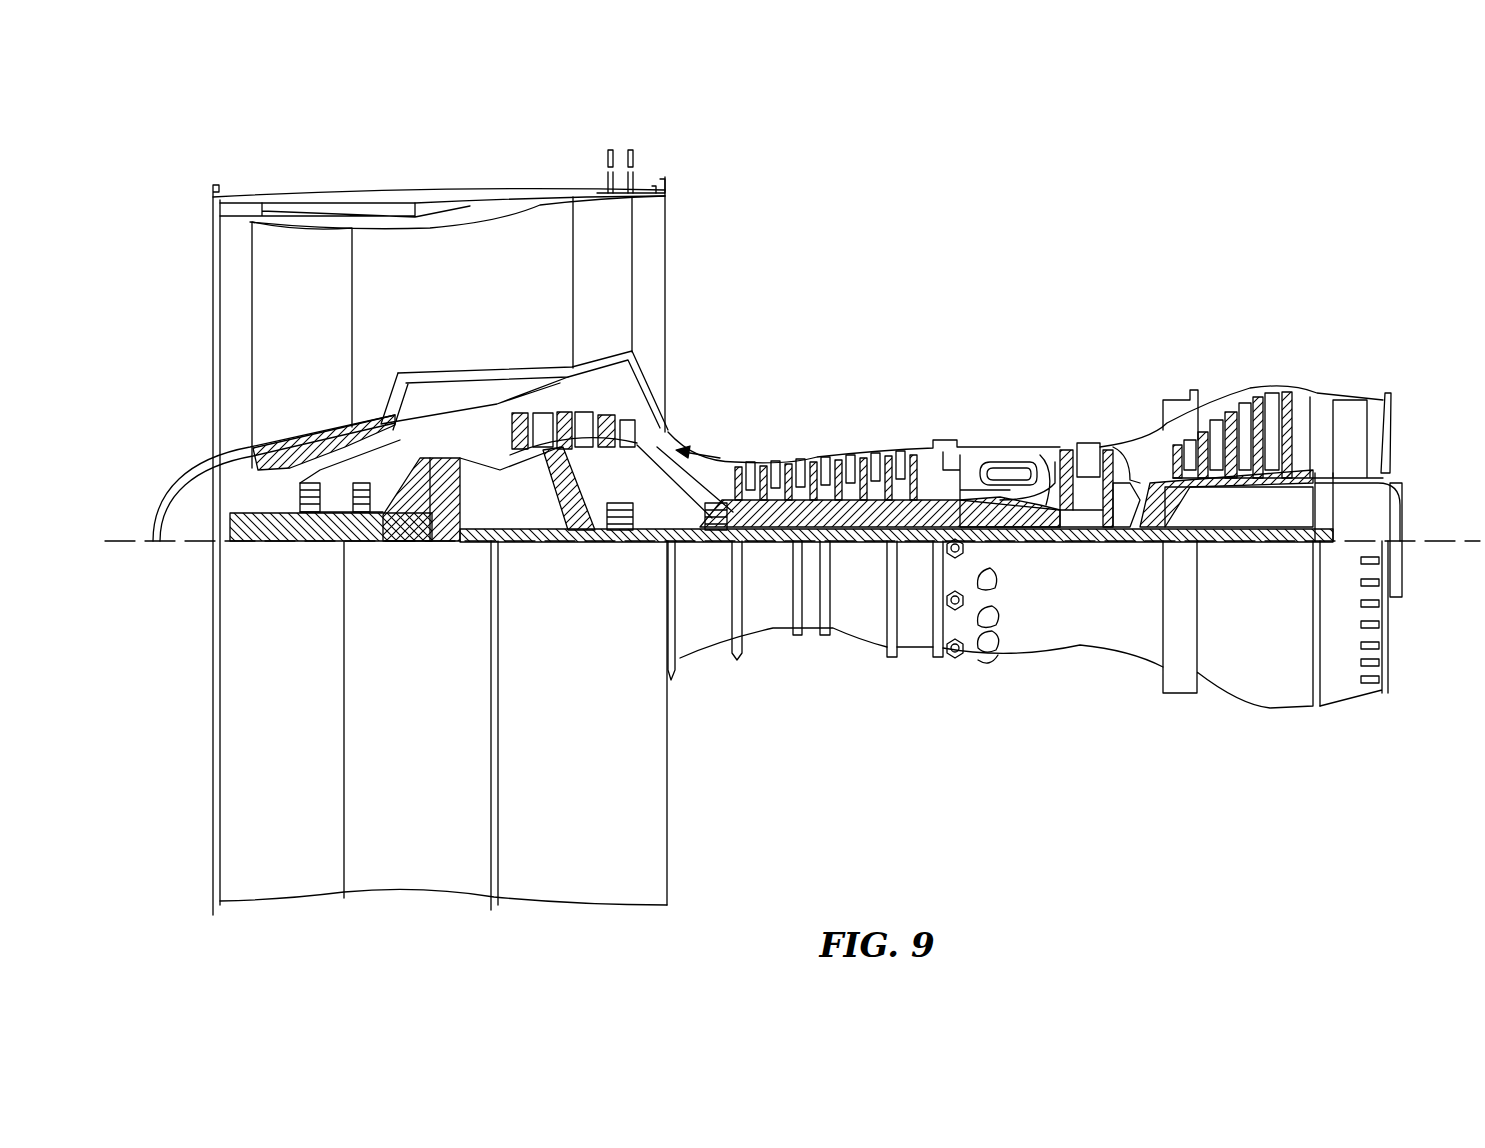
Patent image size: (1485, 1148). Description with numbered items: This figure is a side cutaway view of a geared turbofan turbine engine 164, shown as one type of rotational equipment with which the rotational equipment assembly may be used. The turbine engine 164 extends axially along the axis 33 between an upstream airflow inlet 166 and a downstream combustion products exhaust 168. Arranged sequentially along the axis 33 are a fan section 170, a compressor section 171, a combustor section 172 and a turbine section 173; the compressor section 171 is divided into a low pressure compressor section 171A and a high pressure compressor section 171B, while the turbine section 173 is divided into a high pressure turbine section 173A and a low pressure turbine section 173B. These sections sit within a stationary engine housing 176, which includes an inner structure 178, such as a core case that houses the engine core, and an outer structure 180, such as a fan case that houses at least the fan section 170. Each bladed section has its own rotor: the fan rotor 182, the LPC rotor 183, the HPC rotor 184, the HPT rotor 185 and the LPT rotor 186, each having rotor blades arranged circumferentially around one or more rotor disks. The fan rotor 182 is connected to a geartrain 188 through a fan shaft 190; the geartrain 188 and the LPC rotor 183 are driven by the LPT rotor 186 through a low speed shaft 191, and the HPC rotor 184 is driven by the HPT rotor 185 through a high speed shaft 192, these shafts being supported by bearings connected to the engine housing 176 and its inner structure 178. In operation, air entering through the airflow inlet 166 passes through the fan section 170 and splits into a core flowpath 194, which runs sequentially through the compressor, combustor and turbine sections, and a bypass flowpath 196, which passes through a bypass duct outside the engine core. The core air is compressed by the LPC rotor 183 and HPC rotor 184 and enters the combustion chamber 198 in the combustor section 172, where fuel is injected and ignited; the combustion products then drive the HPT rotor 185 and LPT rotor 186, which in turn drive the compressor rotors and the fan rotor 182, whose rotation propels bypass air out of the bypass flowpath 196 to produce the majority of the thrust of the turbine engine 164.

The axis 33 is at (112, 552).
The geared turbofan turbine engine 164 is at (179, 177).
The airflow inlet 166 is at (212, 273).
The combustion products exhaust 168 is at (1392, 430).
The fan section 170 is at (218, 162).
The compressor section 171 is at (485, 100).
The low pressure compressor section 171A is at (485, 152).
The high pressure compressor section 171B is at (913, 333).
The combustor section 172 is at (935, 330).
The turbine section 173 is at (1345, 257).
The high pressure turbine section 173A is at (1143, 330).
The low pressure turbine section 173B is at (1345, 330).
The engine housing 176 is at (697, 676).
The inner structure 178 is at (778, 630).
The outer structure 180 is at (620, 907).
The fan rotor 182 is at (250, 390).
The LPC rotor 183 is at (565, 483).
The HPC rotor 184 is at (862, 541).
The HPT rotor 185 is at (1085, 541).
The LPT rotor 186 is at (1247, 480).
The geartrain 188 is at (443, 541).
The fan shaft 190 is at (287, 541).
The low speed shaft 191 is at (1260, 541).
The high speed shaft 192 is at (1020, 541).
The core flowpath 194 is at (708, 462).
The bypass flowpath 196 is at (490, 303).
The combustion chamber 198 is at (998, 465).